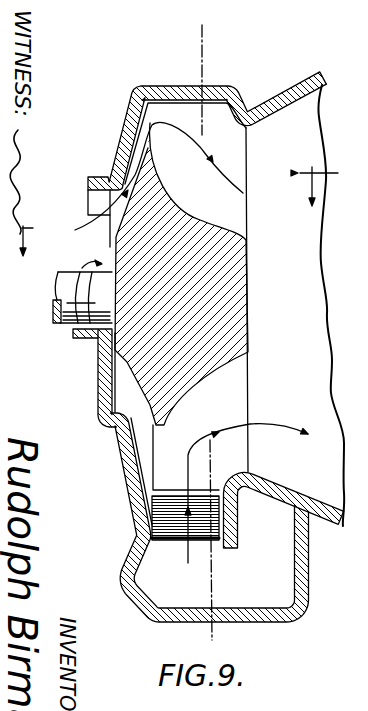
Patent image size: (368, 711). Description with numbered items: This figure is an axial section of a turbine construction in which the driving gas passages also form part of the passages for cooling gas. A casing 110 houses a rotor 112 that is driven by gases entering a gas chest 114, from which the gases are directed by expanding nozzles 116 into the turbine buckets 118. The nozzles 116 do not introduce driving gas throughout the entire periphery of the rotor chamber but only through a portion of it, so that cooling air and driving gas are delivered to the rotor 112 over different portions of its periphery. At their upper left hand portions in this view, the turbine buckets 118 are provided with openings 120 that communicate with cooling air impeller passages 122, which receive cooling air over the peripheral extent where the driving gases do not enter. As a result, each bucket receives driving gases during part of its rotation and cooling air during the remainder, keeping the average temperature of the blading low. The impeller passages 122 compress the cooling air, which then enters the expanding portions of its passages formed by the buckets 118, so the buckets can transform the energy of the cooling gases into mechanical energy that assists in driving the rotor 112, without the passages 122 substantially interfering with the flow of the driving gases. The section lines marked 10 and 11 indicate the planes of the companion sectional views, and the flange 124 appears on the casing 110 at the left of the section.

The section line 10- 10 is at (203, 40).
The section line 11- 11 is at (97, 231).
The casing 110 is at (154, 85).
The rotor 112 is at (231, 276).
The gas chest 114 is at (224, 589).
The expanding nozzles 116 is at (165, 523).
The turbine buckets 118 is at (221, 195).
The openings 120 is at (226, 97).
The cooling air impeller passages 122 is at (120, 224).
The flange 124 is at (97, 206).